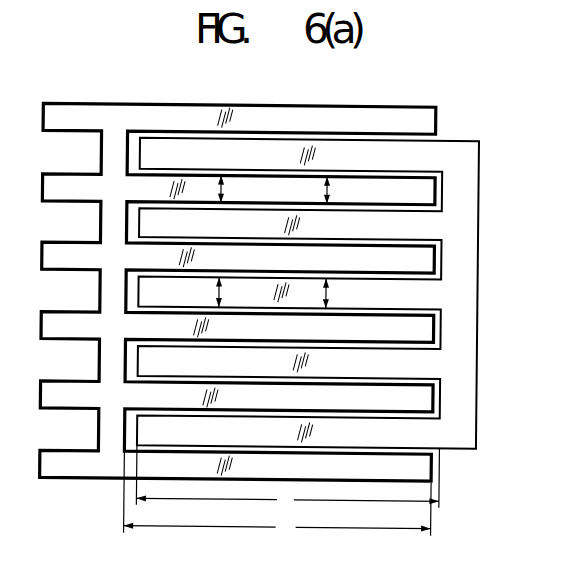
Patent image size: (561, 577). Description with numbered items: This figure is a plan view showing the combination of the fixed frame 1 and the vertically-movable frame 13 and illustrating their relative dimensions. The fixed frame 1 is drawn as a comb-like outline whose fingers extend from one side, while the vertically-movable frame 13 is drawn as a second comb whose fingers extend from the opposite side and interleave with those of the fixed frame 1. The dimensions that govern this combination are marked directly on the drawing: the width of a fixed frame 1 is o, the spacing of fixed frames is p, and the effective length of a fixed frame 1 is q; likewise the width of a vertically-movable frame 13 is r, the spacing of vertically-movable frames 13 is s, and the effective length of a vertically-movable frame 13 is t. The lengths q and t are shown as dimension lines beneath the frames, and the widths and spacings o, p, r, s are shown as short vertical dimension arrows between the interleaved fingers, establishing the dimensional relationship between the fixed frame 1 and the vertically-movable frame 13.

The fixed frame 1 is at (326, 106).
The vertically-movable frame 13 is at (460, 153).
The width of a fixed frame o is at (221, 189).
The spacing of vertically-movable frames s is at (327, 189).
The spacing of fixed frames p is at (220, 292).
The width of a vertically-movable frame r is at (327, 292).
The effective length of a vertically-movable frame t is at (287, 480).
The effective length of a fixed frame q is at (277, 477).